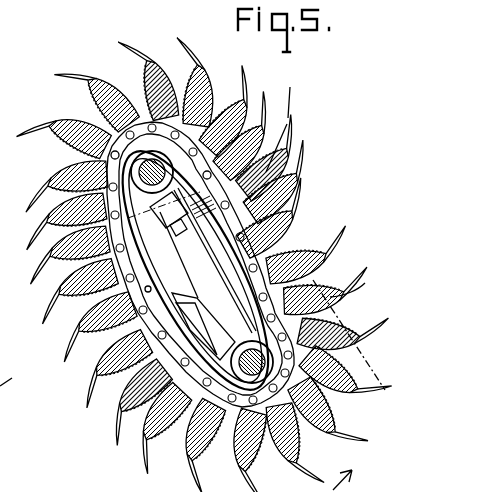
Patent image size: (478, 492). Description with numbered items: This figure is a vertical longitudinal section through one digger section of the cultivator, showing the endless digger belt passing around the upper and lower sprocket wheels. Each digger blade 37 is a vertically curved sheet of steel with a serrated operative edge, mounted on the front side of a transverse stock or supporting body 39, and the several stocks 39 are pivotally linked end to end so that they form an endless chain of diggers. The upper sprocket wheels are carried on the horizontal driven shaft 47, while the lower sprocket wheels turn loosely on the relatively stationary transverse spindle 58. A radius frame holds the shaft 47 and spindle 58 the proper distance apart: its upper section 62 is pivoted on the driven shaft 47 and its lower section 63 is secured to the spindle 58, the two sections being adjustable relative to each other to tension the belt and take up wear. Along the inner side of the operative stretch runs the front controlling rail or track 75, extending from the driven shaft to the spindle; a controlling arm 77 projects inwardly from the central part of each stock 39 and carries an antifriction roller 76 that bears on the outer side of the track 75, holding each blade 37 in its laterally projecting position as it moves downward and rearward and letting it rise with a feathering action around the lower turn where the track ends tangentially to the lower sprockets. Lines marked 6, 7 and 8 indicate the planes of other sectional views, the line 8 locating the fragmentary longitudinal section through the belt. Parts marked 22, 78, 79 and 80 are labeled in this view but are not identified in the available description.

The section line 6— 6 is at (0, 192).
The support 7 is at (6, 384).
The section line 8— 8 is at (333, 231).
The chain link 22 is at (292, 133).
The digger blade 37 is at (353, 290).
The stock or supporting body 39 is at (300, 203).
The upper driven shaft 47 is at (123, 137).
The horizontal transverse spindle 58 is at (327, 400).
The upper section of radius frame 62 is at (152, 268).
The lower section of radius frame 63 is at (206, 296).
The front controlling rail or track 75 is at (148, 289).
The antifriction roller 76 is at (130, 392).
The controlling arm 77 is at (158, 393).
The blade 78 is at (217, 110).
The blade 79 is at (327, 250).
The clamp 80 is at (167, 217).